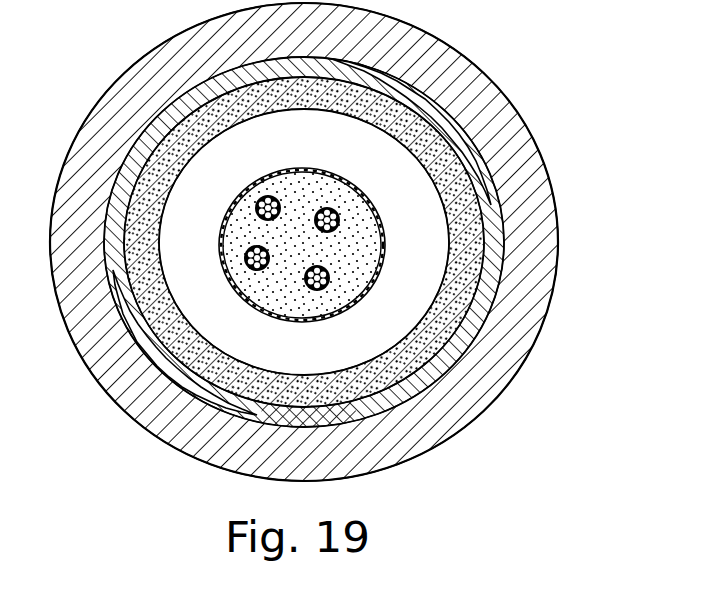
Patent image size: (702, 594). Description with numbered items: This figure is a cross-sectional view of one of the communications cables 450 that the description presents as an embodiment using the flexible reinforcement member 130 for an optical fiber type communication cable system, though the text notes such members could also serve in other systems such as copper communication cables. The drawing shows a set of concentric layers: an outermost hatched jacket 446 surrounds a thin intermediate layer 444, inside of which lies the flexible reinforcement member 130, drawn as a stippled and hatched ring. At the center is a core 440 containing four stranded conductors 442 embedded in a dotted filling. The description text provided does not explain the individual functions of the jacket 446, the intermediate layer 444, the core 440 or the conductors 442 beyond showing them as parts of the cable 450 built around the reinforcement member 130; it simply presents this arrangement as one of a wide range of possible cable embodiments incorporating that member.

The cable 450 is at (351, 297).
The outer jacket 446 is at (508, 116).
The tape wrap layer 444 is at (480, 160).
The flexible reinforcement member 130 is at (484, 224).
The core 440 is at (282, 168).
The conductors 442 is at (330, 280).